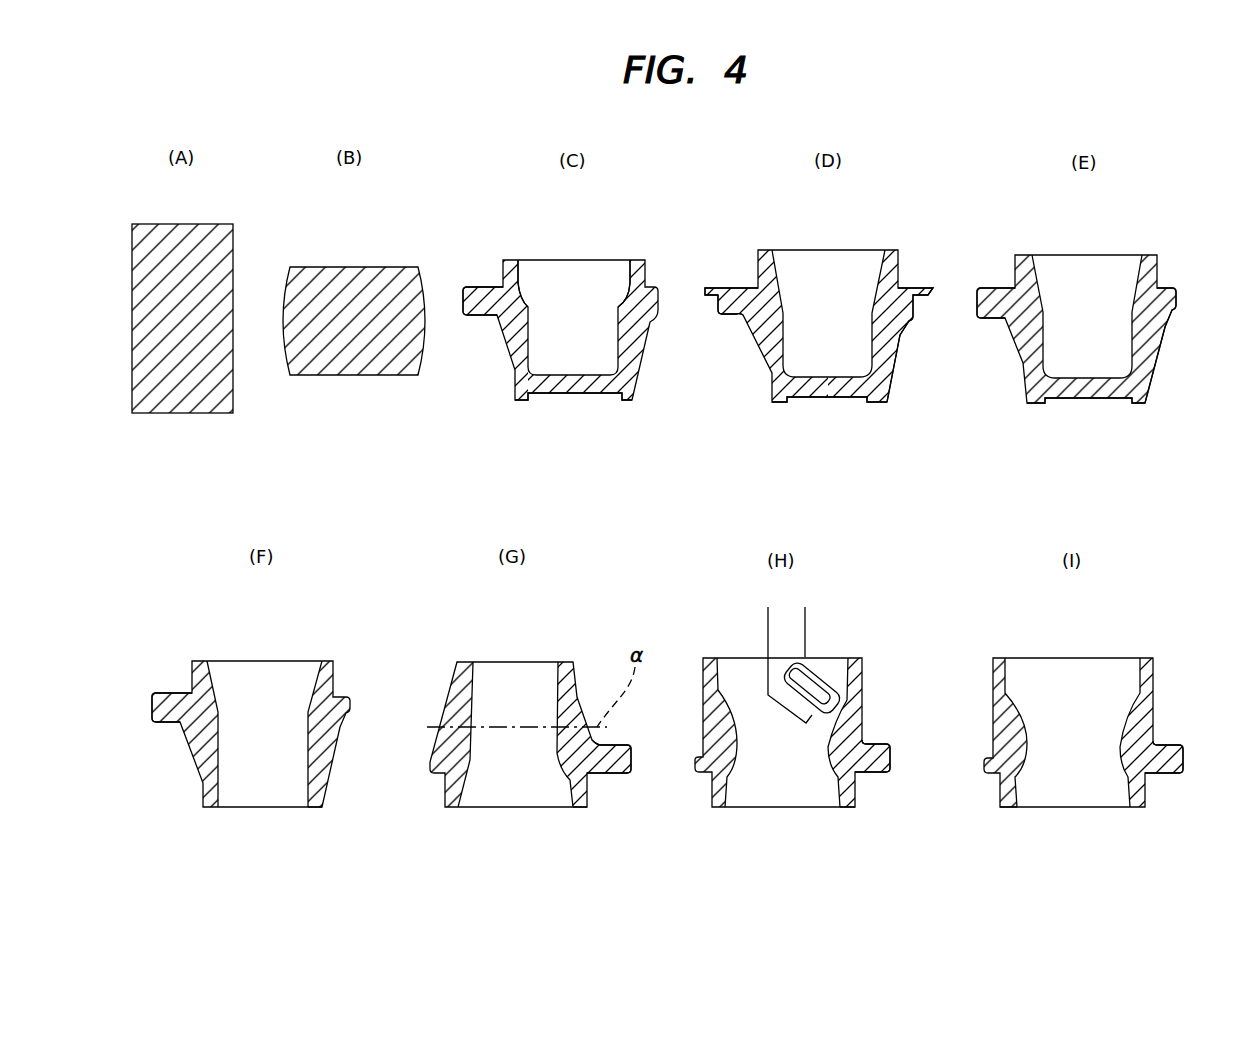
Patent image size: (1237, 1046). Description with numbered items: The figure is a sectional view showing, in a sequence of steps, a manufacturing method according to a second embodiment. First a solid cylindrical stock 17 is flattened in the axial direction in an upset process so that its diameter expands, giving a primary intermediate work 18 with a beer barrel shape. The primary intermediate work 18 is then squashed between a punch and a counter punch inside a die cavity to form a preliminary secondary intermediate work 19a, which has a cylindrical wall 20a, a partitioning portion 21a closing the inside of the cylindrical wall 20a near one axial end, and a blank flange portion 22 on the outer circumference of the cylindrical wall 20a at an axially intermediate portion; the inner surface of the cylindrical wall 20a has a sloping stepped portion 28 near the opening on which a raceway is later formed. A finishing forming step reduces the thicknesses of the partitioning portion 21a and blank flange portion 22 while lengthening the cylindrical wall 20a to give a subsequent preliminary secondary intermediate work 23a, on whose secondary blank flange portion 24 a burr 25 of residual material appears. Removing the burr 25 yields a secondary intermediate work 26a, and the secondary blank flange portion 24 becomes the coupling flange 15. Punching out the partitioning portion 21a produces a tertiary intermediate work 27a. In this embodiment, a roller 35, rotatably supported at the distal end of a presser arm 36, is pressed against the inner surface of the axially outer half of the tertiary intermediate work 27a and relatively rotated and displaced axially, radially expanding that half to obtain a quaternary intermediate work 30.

The coupling flange 15 is at (995, 310).
The solid cylindrical stock 17 is at (213, 393).
The primary intermediate work 18 is at (378, 362).
The preliminary secondary intermediate work 19a is at (633, 272).
The cylindrical wall 20a is at (625, 340).
The partitioning portion 21a is at (567, 385).
The blank flange portion 22 is at (482, 318).
The subsequent preliminary secondary intermediate work 23a is at (883, 385).
The secondary blank flange portion 24 is at (733, 305).
The burr 25 is at (718, 289).
The secondary intermediate work 26a is at (1135, 395).
The tertiary intermediate work 27a is at (318, 797).
The sloping stepped portion 28 is at (533, 287).
The quaternary intermediate work 30 is at (1007, 793).
The roller 35 is at (805, 688).
The presser arm 36 is at (780, 623).